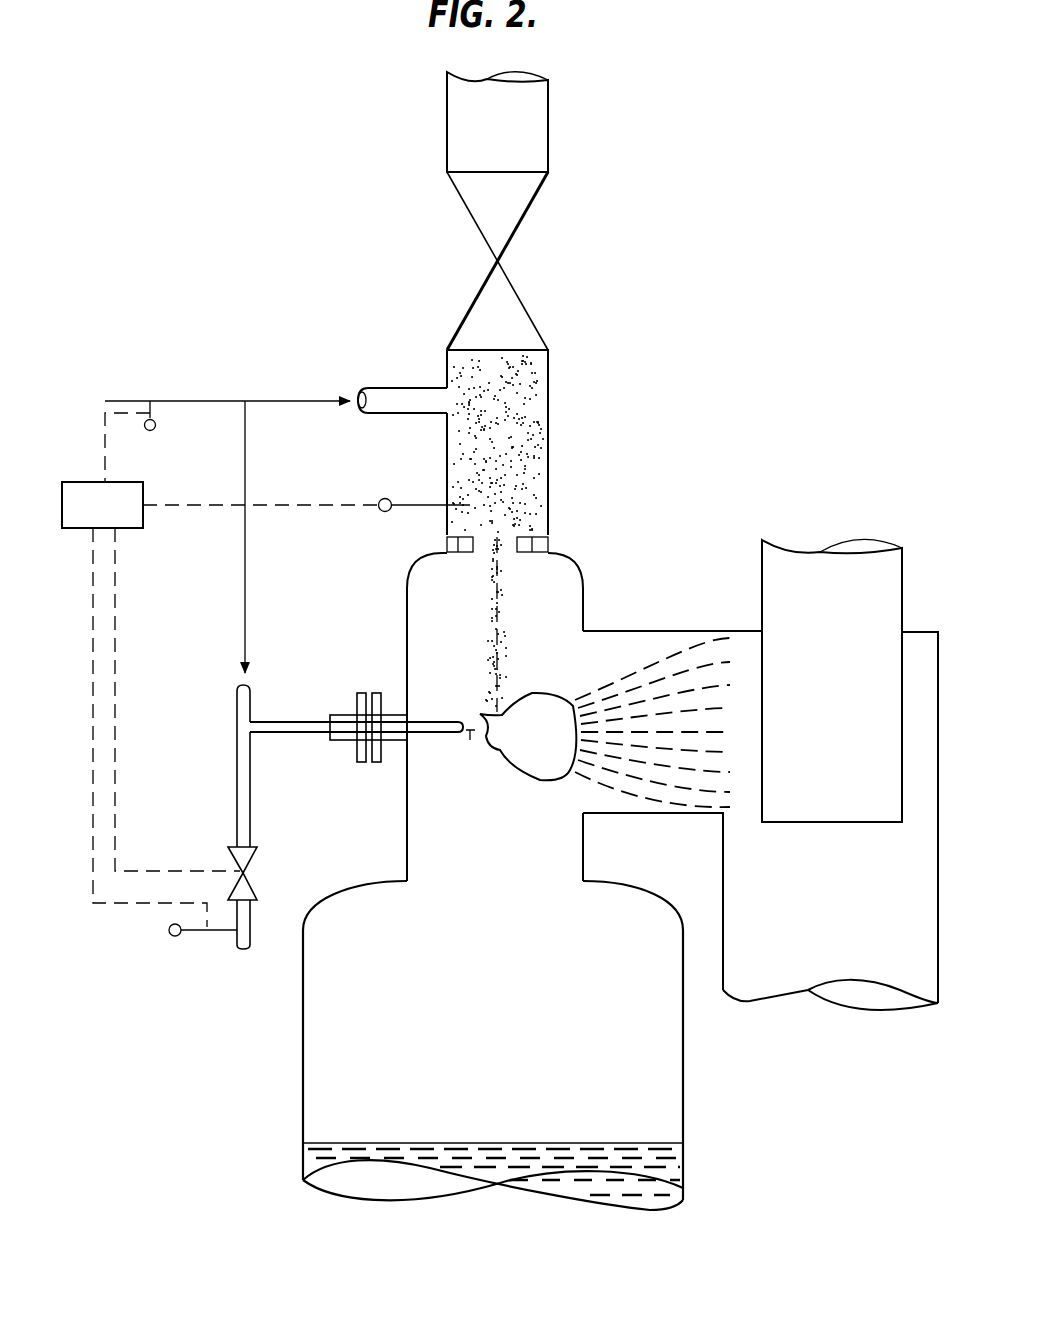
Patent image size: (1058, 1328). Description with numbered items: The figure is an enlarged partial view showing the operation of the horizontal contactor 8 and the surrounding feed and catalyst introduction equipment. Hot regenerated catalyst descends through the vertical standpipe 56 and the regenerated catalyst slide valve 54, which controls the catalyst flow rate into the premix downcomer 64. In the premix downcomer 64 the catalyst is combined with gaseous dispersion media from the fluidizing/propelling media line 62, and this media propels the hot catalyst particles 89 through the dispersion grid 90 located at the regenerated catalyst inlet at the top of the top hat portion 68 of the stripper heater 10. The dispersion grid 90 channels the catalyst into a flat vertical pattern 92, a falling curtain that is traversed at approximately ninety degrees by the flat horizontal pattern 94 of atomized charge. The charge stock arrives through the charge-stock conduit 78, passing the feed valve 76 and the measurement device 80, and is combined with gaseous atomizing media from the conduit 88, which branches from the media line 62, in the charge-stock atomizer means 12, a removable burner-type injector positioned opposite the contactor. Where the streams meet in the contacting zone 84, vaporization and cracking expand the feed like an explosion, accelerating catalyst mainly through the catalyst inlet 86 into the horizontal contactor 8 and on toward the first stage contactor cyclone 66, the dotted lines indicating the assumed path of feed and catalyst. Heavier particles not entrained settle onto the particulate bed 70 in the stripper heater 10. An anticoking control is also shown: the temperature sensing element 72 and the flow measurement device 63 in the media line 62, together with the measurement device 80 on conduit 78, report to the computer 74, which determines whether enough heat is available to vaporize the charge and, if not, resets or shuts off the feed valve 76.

The horizontal contactor 8 is at (648, 818).
The stripper heater 10 is at (299, 1136).
The charge-stock atomizer means 12 is at (444, 740).
The regenerated catalyst slide valve 54 is at (530, 304).
The vertical standpipe 56 is at (548, 133).
The fluidizing/propelling media line 62 is at (261, 401).
The flow measurement device 63 is at (156, 430).
The premix downcomer 64 is at (553, 478).
The first stage contactor cyclone 66 is at (812, 994).
The top hat portion 68 is at (588, 594).
The particulate bed 70 is at (648, 1143).
The temperature sensing element 72 is at (391, 493).
The computer 74 is at (117, 517).
The feed valve 76 is at (251, 876).
The charge-stock conduit 78 is at (252, 822).
The measurement device 80 is at (210, 936).
The contacting zone 84 is at (540, 772).
The catalyst inlet 86 is at (606, 646).
The atomizing media conduit 88 is at (249, 604).
The hot catalyst particles 89 is at (522, 450).
The dispersion grid 90 is at (553, 540).
The flat vertical pattern 92 is at (504, 641).
The flat horizontal pattern 94 is at (472, 745).